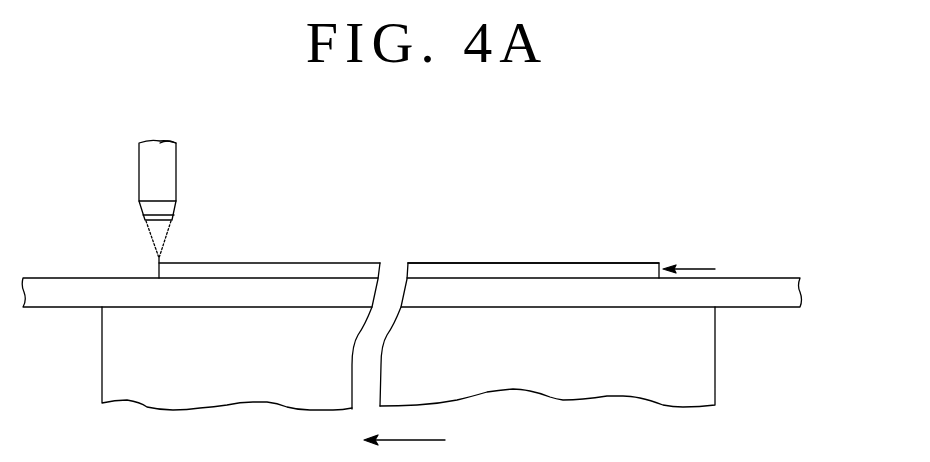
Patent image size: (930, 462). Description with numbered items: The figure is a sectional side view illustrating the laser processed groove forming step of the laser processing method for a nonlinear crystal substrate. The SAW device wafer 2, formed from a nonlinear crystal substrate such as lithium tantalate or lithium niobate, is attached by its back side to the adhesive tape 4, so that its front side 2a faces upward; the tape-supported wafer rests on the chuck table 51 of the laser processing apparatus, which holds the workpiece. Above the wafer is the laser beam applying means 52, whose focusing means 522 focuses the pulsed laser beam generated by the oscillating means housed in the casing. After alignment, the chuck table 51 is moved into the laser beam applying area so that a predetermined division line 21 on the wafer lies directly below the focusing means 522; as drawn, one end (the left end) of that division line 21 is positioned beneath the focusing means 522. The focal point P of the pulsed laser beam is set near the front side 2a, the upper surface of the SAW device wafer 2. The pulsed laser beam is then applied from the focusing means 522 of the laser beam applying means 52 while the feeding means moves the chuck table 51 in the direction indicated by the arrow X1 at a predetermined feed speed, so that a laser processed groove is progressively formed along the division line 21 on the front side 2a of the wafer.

The adhesive tape 4 is at (45, 281).
The chuck table 51 is at (110, 363).
The SAW device wafer 2 is at (409, 234).
The front side 2a is at (457, 262).
The division line 21 is at (705, 269).
The laser beam applying means 52 is at (197, 172).
The focusing means 522 is at (170, 184).
The focal point P is at (154, 257).
The feed direction arrow X1 is at (386, 440).